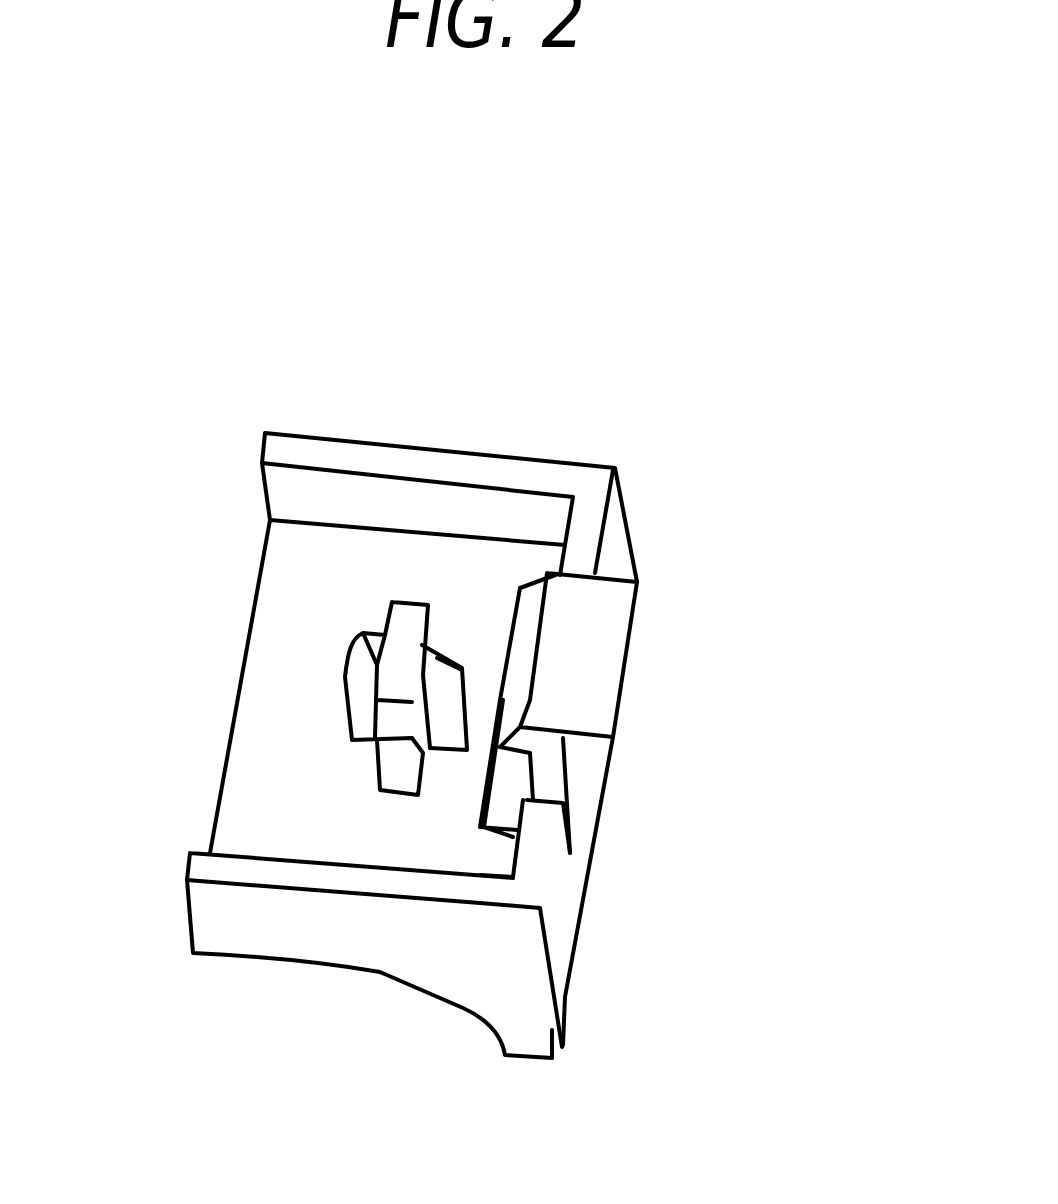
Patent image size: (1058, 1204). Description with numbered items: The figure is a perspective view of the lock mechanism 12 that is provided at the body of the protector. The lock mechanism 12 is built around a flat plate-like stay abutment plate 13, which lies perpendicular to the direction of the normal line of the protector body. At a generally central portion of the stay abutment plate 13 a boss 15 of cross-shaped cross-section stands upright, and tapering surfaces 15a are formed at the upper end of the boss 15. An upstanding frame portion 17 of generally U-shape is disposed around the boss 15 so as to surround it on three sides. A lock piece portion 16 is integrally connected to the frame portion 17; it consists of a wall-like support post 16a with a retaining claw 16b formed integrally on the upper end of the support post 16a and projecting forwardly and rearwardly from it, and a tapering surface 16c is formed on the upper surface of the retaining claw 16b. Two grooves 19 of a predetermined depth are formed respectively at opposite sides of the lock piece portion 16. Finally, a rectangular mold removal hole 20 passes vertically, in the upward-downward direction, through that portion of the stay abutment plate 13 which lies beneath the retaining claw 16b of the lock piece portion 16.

The lock mechanism 12 is at (826, 314).
The stay abutment plate 13 is at (307, 585).
The boss 15 is at (323, 692).
The tapering surfaces 15a is at (443, 662).
The lock piece portion 16 is at (676, 620).
The support post 16a is at (593, 760).
The retaining claw 16b is at (590, 652).
The tapering surface 16c is at (528, 595).
The frame portion 17 is at (217, 870).
The grooves 19 is at (523, 830).
The mold removal hole 20 is at (552, 820).